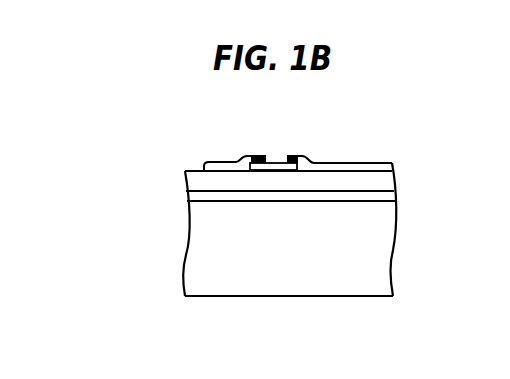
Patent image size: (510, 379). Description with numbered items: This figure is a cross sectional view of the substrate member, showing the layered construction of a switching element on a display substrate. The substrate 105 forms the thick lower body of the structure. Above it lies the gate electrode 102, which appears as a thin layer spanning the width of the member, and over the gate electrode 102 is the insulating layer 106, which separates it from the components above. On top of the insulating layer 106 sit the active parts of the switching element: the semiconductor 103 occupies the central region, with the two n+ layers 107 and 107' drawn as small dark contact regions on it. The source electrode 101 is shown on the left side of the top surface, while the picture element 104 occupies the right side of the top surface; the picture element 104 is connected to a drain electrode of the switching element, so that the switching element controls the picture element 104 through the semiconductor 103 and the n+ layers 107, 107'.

The source electrode 101 is at (222, 167).
The gate electrode 102 is at (383, 194).
The semiconductor 103 is at (304, 163).
The picture element 104 is at (380, 163).
The substrate 105 is at (390, 223).
The insulating layer 106 is at (382, 178).
The n+ layer 107 is at (300, 138).
The n+ layer 107' is at (243, 138).